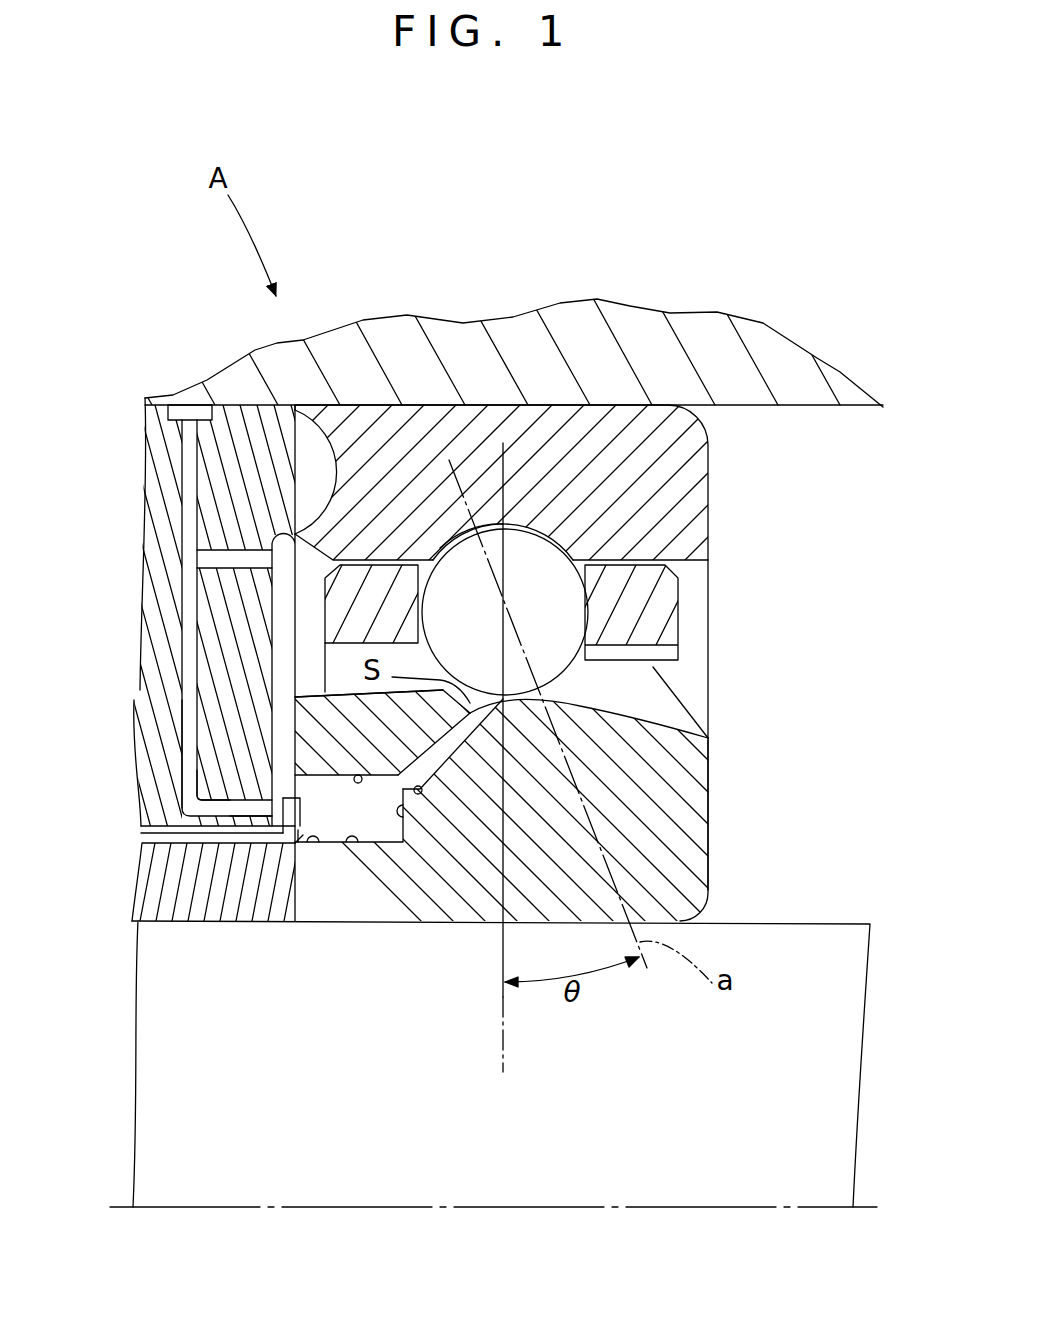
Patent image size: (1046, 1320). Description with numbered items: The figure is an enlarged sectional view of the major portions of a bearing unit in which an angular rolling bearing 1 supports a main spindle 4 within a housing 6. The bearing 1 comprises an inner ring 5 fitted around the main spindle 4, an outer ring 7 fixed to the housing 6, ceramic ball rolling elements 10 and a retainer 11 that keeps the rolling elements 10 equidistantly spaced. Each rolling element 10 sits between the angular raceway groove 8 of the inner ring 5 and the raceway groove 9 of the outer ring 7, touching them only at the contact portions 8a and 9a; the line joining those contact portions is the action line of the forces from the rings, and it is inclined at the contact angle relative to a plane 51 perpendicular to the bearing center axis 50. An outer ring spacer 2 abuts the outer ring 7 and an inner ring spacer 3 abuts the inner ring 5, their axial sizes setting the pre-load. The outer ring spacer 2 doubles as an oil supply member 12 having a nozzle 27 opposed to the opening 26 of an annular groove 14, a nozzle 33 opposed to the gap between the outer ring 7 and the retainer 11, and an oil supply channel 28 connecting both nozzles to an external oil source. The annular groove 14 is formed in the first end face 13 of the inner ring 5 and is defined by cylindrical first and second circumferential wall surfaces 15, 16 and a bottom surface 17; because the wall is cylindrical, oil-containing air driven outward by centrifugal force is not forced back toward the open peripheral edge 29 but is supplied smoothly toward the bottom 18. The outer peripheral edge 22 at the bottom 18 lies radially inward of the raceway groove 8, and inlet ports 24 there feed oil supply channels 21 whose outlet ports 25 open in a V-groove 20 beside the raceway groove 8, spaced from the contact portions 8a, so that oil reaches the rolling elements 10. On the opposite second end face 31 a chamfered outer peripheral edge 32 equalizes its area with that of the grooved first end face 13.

The angular rolling bearing 1 is at (523, 559).
The outer ring spacer 2 is at (212, 576).
The inner ring spacer 3 is at (155, 885).
The main spindle 4 is at (838, 925).
The inner ring 5 is at (618, 794).
The housing 6 is at (712, 323).
The outer ring 7 is at (523, 559).
The raceway groove 8 is at (541, 685).
The contact portion 8a is at (700, 735).
The raceway groove 9 is at (548, 545).
The contact portion 9a is at (477, 525).
The rolling element 10 is at (443, 547).
The retainer 11 is at (672, 612).
The oil supply member 12 is at (170, 494).
The first end face 13 is at (278, 845).
The annular groove 14 is at (316, 842).
The first circumferential wall surface 15 is at (298, 708).
The second circumferential wall surface 16 is at (352, 842).
The bottom surface 17 is at (443, 792).
The bottom 18 is at (394, 842).
The V-groove 20 is at (476, 706).
The oil supply channel 21 is at (462, 775).
The outer peripheral edge 22 is at (307, 688).
The inlet port 24 is at (398, 780).
The outlet port 25 is at (468, 700).
The opening 26 is at (215, 795).
The nozzle 27 is at (295, 833).
The oil supply channel 28 is at (190, 766).
The open peripheral edge 29 is at (212, 757).
The second end face 31 is at (708, 783).
The chamfered outer peripheral edge 32 is at (707, 698).
The nozzle 33 is at (290, 403).
The bearing center axis 50 is at (640, 1205).
The plane 51 is at (503, 1052).